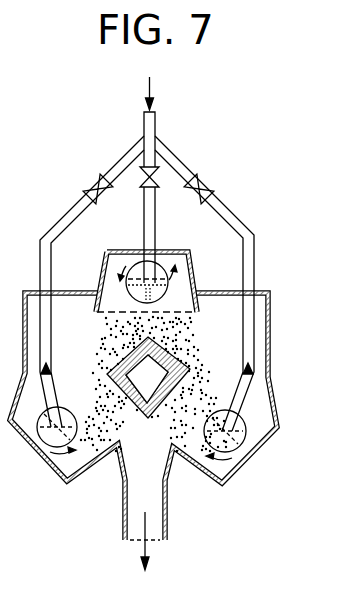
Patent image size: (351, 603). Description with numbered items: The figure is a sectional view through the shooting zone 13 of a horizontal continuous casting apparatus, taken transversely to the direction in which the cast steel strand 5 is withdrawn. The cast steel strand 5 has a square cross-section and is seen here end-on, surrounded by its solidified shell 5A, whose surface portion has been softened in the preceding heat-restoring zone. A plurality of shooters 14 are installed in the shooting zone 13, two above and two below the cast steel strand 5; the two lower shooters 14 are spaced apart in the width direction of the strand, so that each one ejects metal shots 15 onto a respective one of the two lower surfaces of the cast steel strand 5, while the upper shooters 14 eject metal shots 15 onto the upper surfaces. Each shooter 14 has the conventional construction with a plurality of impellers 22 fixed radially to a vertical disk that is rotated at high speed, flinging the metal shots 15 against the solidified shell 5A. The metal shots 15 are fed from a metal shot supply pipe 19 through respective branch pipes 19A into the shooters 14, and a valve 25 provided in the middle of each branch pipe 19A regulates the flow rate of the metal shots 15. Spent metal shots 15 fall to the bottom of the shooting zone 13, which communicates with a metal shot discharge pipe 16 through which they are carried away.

The cast steel strand 5 is at (193, 369).
The solidified shell 5A is at (147, 379).
The shooting zone 13 is at (233, 298).
The shooter 14 is at (200, 250).
The metal shots 15 is at (180, 343).
The metal shot discharge pipe 16 is at (167, 497).
The metal shot supply pipe 19 is at (144, 126).
The branch pipe 19A is at (228, 219).
The impeller 22 is at (168, 283).
The valve 25 is at (212, 149).